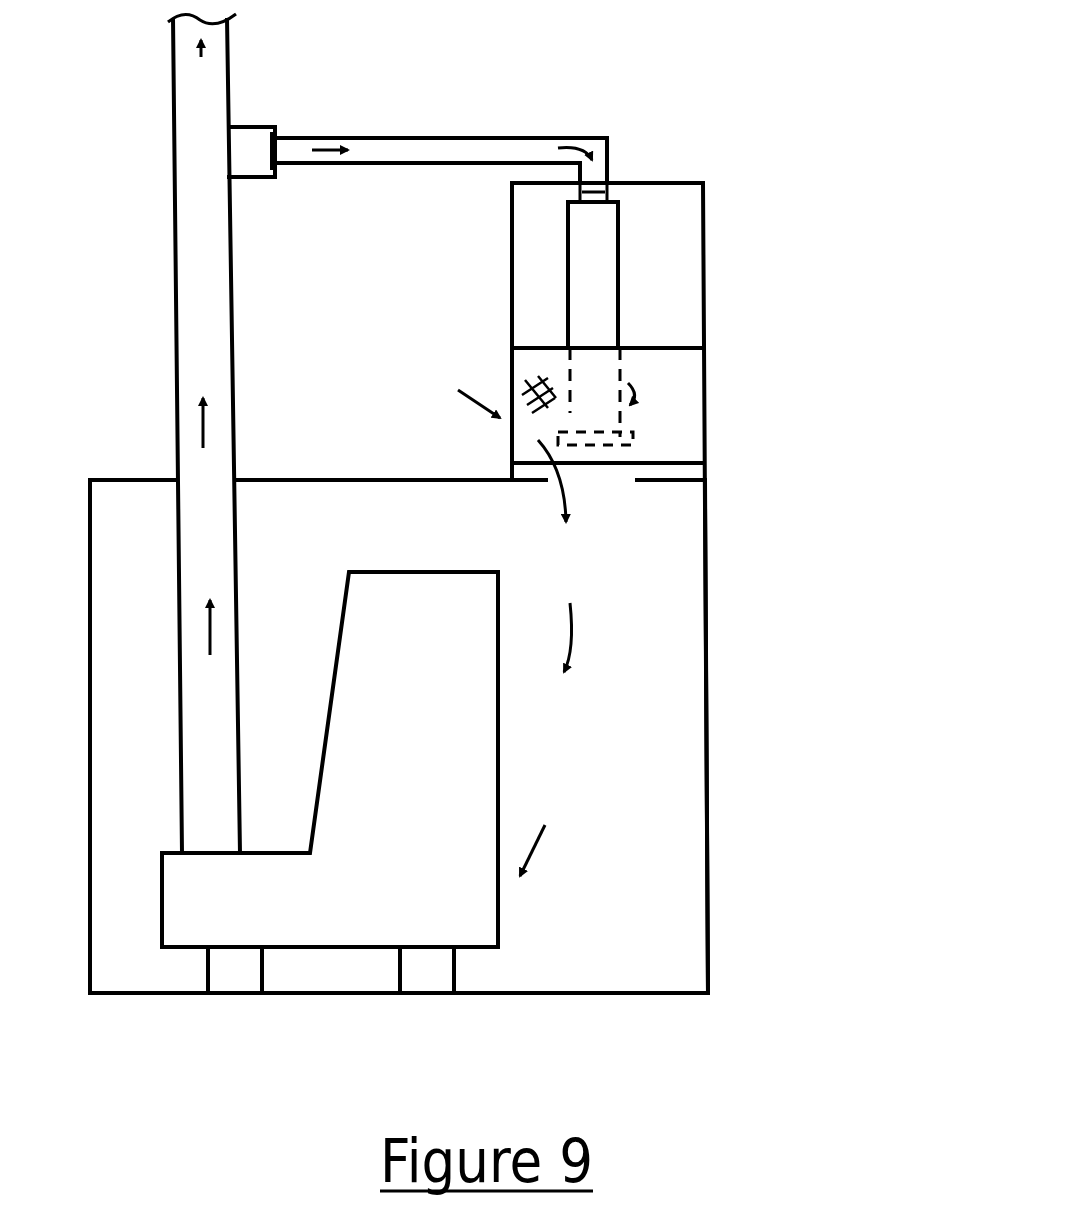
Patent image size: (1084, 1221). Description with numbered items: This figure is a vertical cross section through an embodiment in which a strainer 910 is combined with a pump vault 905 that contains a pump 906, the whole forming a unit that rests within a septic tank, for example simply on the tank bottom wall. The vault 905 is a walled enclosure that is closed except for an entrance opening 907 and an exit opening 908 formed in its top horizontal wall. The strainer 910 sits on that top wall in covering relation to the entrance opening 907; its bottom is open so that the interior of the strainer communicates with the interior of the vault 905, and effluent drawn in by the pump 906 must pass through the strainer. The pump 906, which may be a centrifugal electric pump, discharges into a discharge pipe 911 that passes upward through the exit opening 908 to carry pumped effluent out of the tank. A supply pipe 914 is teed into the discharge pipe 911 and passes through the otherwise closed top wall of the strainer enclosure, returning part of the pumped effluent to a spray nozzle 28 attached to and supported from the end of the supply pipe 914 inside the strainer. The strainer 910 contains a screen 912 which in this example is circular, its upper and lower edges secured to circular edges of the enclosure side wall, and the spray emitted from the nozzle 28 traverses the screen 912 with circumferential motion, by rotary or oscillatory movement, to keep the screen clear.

The pump vault 905 is at (708, 733).
The pump 906 is at (497, 777).
The entrance opening 907 is at (595, 485).
The exit opening 908 is at (235, 478).
The strainer 910 is at (712, 238).
The discharge pipe 911 is at (178, 405).
The screen 912 is at (667, 442).
The supply pipe 914 is at (402, 138).
The spray nozzle 28 is at (620, 206).